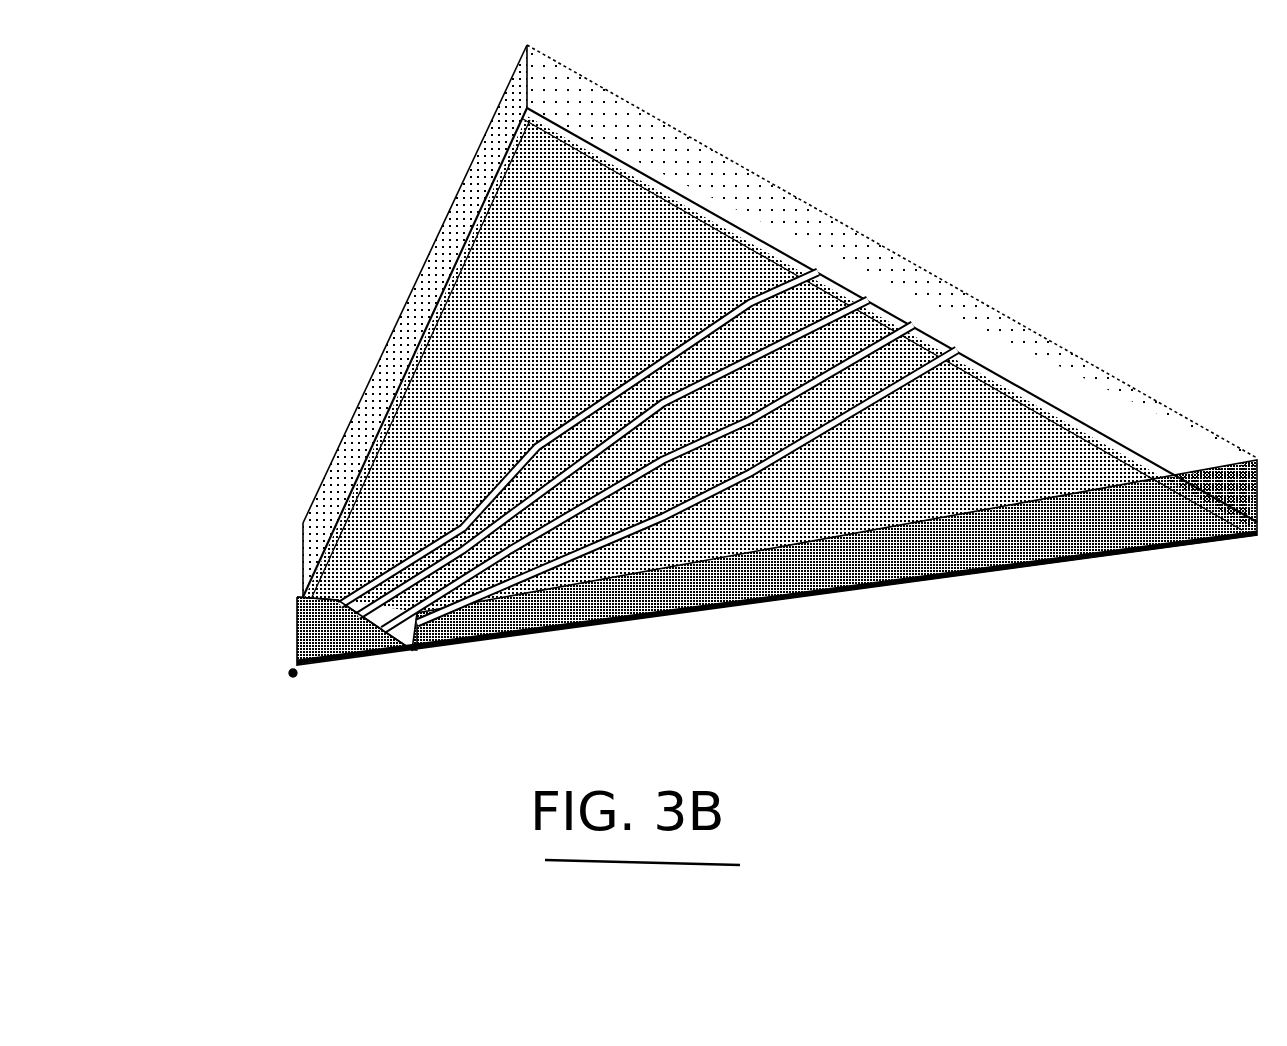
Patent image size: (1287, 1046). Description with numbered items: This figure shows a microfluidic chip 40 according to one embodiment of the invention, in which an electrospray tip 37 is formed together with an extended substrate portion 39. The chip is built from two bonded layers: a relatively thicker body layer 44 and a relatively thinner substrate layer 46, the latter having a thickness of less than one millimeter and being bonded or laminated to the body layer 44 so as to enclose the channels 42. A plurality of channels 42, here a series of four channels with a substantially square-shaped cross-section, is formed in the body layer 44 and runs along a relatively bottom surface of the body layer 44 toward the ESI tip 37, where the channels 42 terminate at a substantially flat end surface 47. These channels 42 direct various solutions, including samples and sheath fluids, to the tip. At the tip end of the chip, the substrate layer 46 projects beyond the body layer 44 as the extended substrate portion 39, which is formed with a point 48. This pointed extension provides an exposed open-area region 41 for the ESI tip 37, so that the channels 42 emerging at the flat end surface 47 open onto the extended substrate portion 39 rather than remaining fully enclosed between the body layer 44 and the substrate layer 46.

The electrospray tip 37 is at (268, 574).
The extended substrate portion 39 is at (368, 733).
The microfluidic chip 40 is at (1040, 240).
The exposed open-area region 41 is at (330, 627).
The channels 42 is at (957, 345).
The body layer 44 is at (686, 582).
The substrate layer 46 is at (877, 597).
The flat end surface 47 is at (337, 568).
The point 48 is at (292, 676).